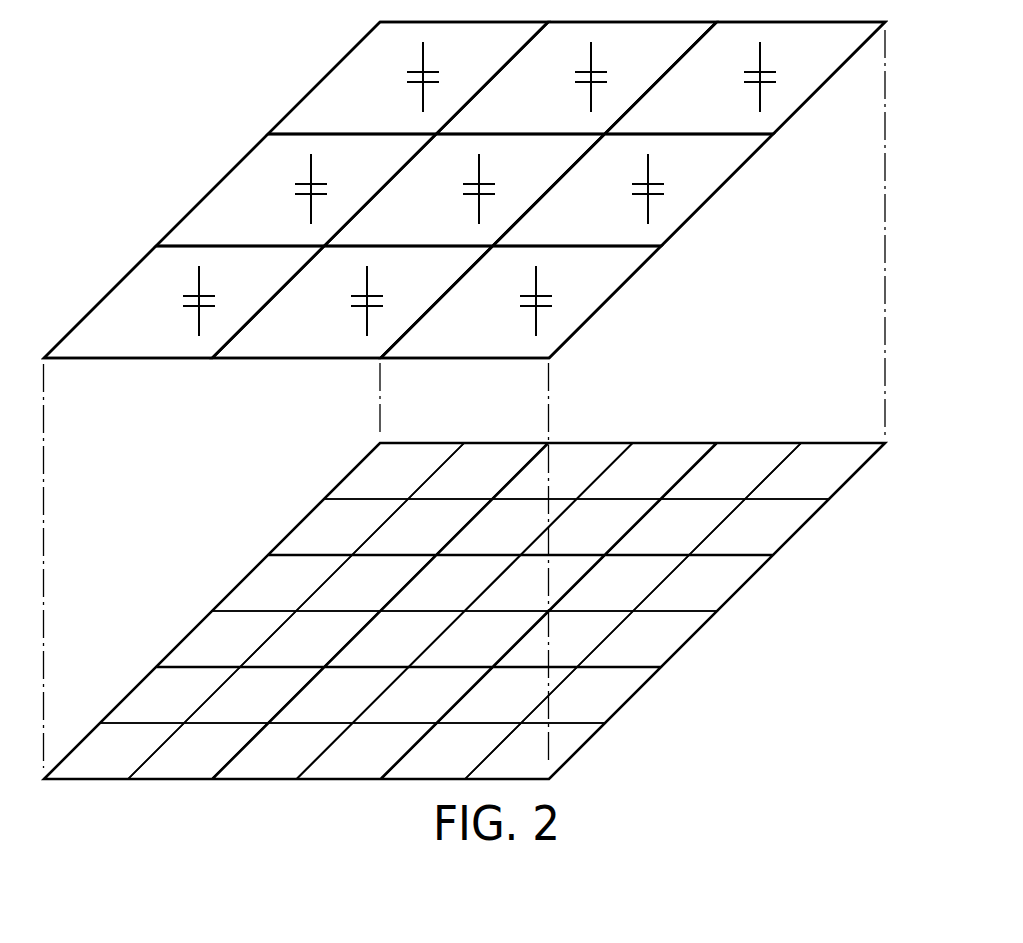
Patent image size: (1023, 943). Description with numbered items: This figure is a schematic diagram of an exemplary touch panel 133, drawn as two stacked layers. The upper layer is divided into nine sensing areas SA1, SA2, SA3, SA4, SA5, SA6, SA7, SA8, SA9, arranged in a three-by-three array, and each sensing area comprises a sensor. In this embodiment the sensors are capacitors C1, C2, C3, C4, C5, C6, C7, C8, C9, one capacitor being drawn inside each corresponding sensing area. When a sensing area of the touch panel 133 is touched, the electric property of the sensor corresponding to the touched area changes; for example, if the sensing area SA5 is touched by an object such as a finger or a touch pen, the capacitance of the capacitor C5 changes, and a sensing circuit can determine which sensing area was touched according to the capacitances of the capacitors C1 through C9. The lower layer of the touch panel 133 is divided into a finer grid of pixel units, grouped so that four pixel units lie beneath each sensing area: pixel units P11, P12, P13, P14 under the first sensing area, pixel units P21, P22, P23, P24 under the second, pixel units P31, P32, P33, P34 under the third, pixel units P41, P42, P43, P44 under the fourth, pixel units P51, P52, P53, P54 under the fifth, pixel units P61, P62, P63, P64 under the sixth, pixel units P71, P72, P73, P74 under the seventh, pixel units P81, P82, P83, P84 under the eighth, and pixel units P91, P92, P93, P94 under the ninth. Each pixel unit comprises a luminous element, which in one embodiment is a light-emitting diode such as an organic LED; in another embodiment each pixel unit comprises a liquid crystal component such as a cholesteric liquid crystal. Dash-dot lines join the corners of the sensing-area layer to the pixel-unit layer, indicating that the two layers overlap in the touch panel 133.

The touch panel 133 is at (939, 164).
The sensing area SA1 is at (383, 122).
The sensing area SA2 is at (551, 122).
The sensing area SA3 is at (720, 122).
The sensing area SA4 is at (271, 234).
The sensing area SA5 is at (439, 234).
The sensing area SA6 is at (608, 234).
The sensing area SA7 is at (159, 346).
The sensing area SA8 is at (327, 346).
The sensing area SA9 is at (496, 346).
The capacitor C1 is at (428, 63).
The capacitor C2 is at (596, 63).
The capacitor C3 is at (765, 63).
The capacitor C4 is at (316, 175).
The capacitor C5 is at (484, 175).
The capacitor C6 is at (653, 175).
The capacitor C7 is at (204, 287).
The capacitor C8 is at (372, 287).
The capacitor C9 is at (541, 287).
The pixel unit P11 is at (412, 490).
The pixel unit P12 is at (496, 490).
The pixel unit P13 is at (356, 546).
The pixel unit P14 is at (440, 546).
The pixel unit P21 is at (580, 490).
The pixel unit P22 is at (665, 490).
The pixel unit P23 is at (524, 546).
The pixel unit P24 is at (609, 546).
The pixel unit P31 is at (749, 490).
The pixel unit P32 is at (833, 490).
The pixel unit P33 is at (693, 546).
The pixel unit P34 is at (777, 546).
The pixel unit P41 is at (300, 602).
The pixel unit P42 is at (384, 602).
The pixel unit P43 is at (244, 658).
The pixel unit P44 is at (328, 658).
The pixel unit P51 is at (468, 602).
The pixel unit P52 is at (553, 602).
The pixel unit P53 is at (412, 658).
The pixel unit P54 is at (497, 658).
The pixel unit P61 is at (637, 602).
The pixel unit P62 is at (721, 602).
The pixel unit P63 is at (581, 658).
The pixel unit P64 is at (665, 658).
The pixel unit P71 is at (188, 714).
The pixel unit P72 is at (272, 714).
The pixel unit P73 is at (132, 770).
The pixel unit P74 is at (216, 770).
The pixel unit P81 is at (356, 714).
The pixel unit P82 is at (441, 714).
The pixel unit P83 is at (300, 770).
The pixel unit P84 is at (385, 770).
The pixel unit P91 is at (525, 714).
The pixel unit P92 is at (609, 714).
The pixel unit P93 is at (469, 770).
The pixel unit P94 is at (553, 770).